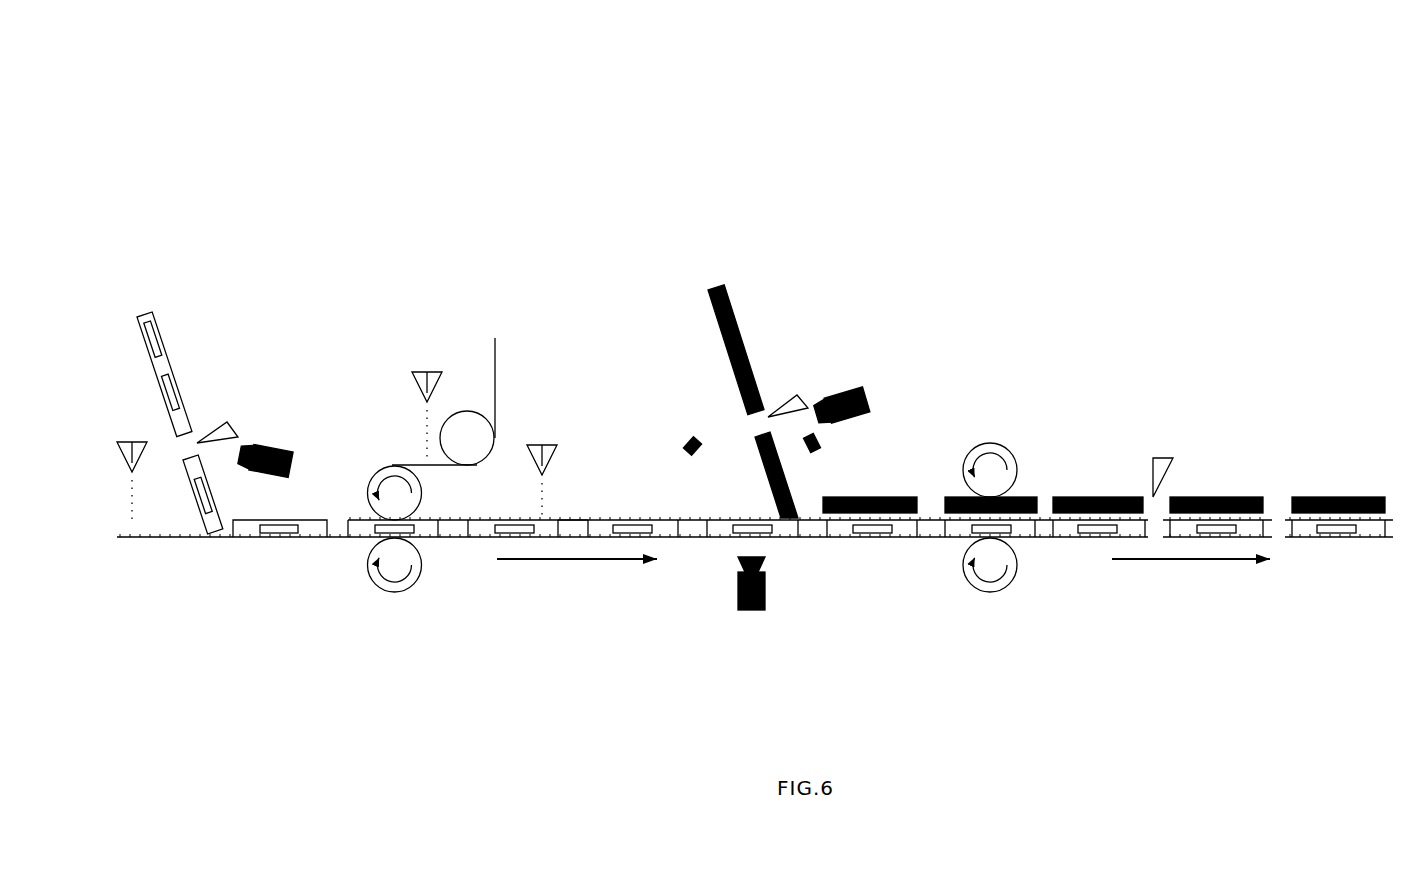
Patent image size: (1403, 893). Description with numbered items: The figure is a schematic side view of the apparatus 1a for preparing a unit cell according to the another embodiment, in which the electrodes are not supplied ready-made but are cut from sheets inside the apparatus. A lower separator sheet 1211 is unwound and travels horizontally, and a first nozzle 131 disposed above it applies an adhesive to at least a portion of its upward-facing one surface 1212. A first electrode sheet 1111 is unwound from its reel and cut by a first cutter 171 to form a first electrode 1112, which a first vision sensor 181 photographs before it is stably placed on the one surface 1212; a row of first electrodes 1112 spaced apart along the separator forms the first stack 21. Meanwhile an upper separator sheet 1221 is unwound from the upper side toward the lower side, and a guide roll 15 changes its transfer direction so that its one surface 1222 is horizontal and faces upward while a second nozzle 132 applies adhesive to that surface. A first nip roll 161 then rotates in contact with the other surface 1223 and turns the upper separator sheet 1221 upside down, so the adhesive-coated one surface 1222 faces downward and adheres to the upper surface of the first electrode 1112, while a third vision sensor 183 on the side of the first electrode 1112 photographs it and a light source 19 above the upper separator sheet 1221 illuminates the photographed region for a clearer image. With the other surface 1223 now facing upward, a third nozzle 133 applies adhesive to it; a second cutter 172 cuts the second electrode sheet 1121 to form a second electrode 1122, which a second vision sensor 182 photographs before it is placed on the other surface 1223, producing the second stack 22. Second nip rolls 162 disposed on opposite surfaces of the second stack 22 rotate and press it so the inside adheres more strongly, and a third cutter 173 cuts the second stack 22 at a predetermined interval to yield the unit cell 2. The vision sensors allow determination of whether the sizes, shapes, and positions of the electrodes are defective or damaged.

The apparatus for preparing a unit cell 1a is at (893, 212).
The first electrode sheet 1111 is at (168, 356).
The first electrode 1112 is at (274, 539).
The second electrode sheet 1121 is at (725, 335).
The second electrode 1122 is at (905, 497).
The lower separator sheet 1211 is at (157, 539).
The one surface of the lower separator sheet 1212 is at (334, 530).
The upper separator sheet 1221 is at (495, 353).
The one surface of the upper separator sheet 1222 is at (427, 464).
The other surface of the upper separator sheet 1223 is at (635, 518).
The first nozzle 131 is at (132, 440).
The second nozzle 132 is at (427, 370).
The third nozzle 133 is at (542, 443).
The guide roll 15 is at (465, 446).
The first nip roll 161 is at (398, 557).
The second nip roll 162 is at (997, 552).
The first cutter 171 is at (222, 421).
The second cutter 172 is at (793, 395).
The third cutter 173 is at (1160, 457).
The first vision sensor 181 is at (285, 447).
The second vision sensor 182 is at (855, 388).
The third vision sensor 183 is at (752, 612).
The light source 19 is at (823, 445).
The first stack 21 is at (579, 485).
The second stack 22 is at (876, 492).
The unit cell 2 is at (1338, 497).